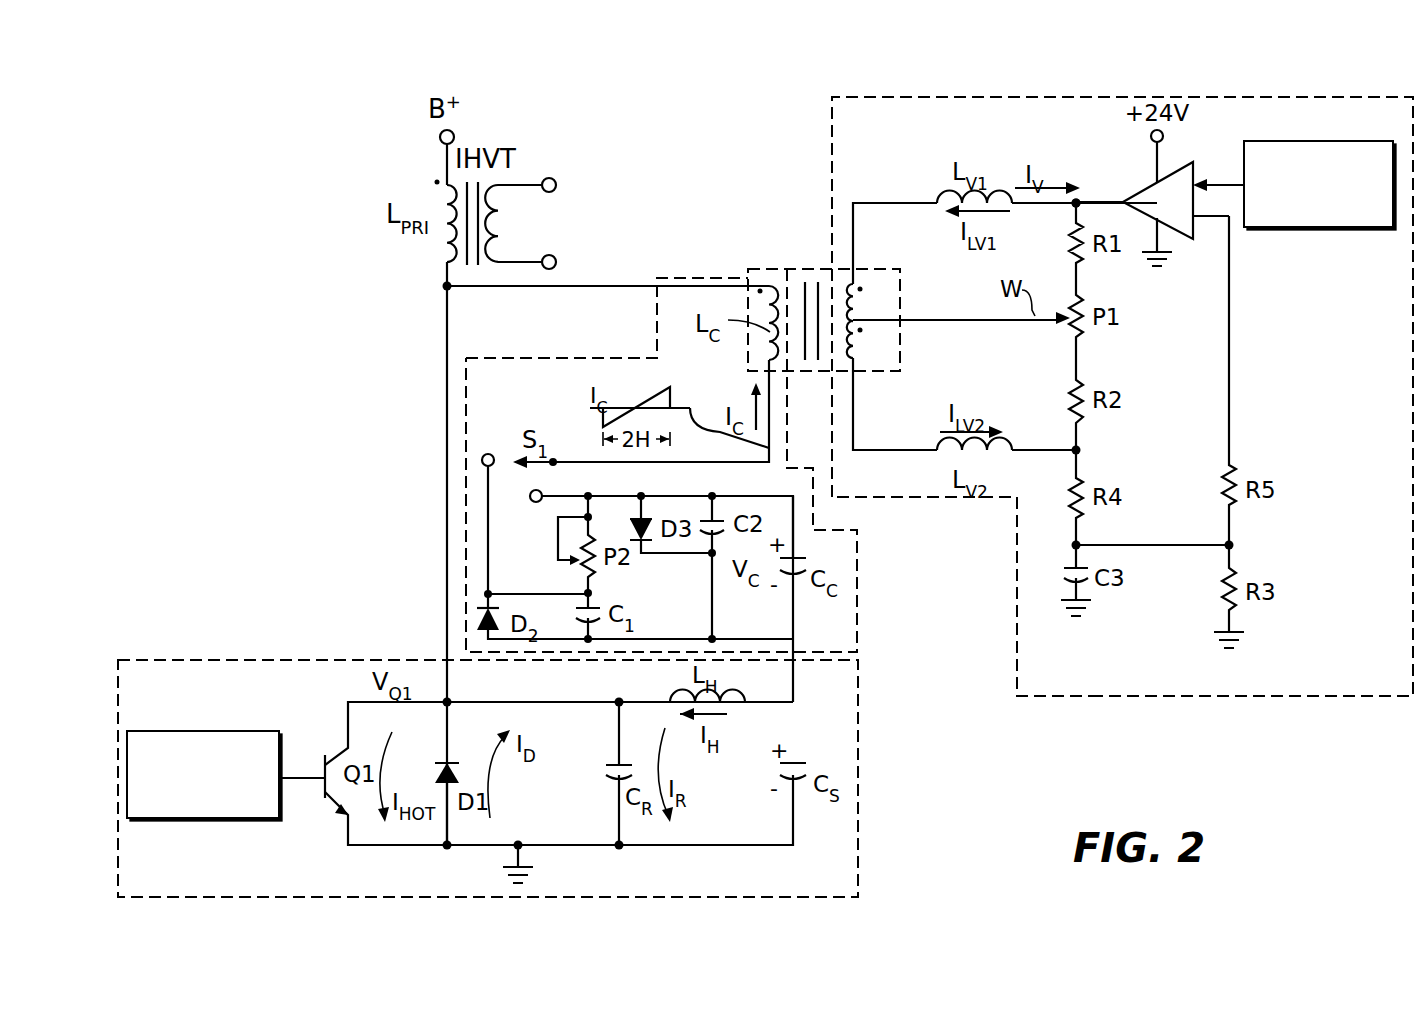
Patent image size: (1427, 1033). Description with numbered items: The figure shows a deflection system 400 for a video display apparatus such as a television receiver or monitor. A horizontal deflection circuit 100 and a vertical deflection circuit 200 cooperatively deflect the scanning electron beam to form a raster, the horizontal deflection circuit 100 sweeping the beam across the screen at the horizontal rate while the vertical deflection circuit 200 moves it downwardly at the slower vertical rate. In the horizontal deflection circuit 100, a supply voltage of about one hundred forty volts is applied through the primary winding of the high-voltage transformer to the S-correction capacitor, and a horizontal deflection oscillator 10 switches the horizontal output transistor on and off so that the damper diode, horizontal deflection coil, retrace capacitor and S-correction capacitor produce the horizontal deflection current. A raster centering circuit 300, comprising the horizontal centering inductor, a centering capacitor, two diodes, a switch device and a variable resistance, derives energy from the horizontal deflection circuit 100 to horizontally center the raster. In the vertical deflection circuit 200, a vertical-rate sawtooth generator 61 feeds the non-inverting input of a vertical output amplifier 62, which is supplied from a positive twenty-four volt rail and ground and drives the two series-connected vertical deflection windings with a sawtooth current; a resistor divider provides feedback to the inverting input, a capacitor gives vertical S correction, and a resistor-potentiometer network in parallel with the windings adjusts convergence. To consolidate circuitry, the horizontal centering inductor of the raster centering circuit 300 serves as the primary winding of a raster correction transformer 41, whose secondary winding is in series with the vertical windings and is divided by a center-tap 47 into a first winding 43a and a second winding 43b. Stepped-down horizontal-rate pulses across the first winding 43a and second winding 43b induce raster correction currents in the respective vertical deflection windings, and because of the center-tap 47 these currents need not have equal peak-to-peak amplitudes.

The horizontal deflection oscillator 10 is at (225, 732).
The raster correction transformer 41 is at (773, 268).
The first winding 43a is at (847, 286).
The second winding 43b is at (853, 358).
The center-tap 47 is at (925, 320).
The vertical-rate sawtooth generator 61 is at (1337, 141).
The vertical output amplifier 62 is at (1136, 190).
The horizontal deflection circuit 100 is at (859, 822).
The vertical deflection circuit 200 is at (1113, 696).
The raster centering circuit 300 is at (858, 632).
The deflection system 400 is at (940, 86).